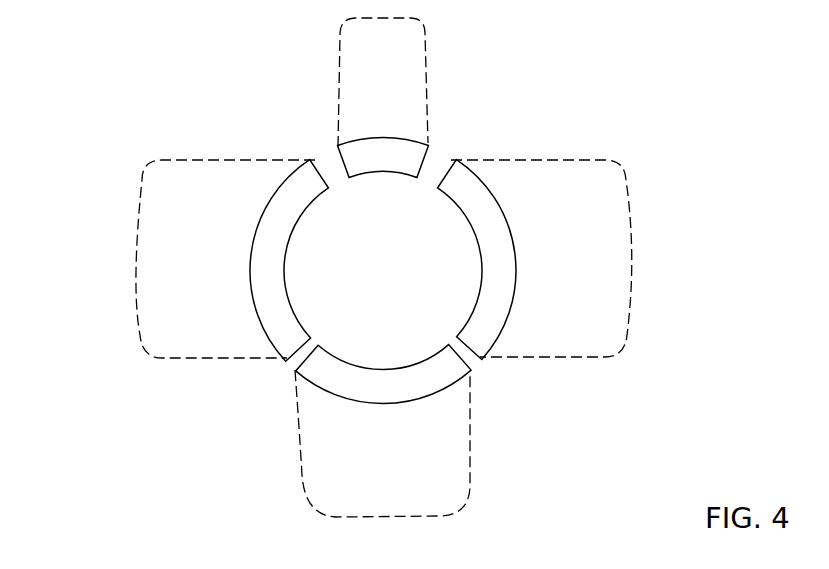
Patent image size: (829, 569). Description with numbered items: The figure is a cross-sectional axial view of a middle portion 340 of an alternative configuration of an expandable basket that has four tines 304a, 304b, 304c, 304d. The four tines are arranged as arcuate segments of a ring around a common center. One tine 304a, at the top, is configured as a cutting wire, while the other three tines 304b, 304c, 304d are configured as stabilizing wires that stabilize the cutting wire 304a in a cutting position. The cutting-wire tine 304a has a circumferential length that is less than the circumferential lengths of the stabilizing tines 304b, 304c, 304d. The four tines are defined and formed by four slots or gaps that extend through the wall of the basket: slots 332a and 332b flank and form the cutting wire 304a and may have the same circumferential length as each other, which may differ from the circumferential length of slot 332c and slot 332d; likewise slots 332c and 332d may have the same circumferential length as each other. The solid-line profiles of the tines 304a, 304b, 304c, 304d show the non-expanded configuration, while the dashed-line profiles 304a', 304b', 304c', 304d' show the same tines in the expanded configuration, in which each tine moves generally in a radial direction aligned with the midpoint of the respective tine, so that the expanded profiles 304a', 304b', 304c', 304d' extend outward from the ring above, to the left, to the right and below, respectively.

The middle portion 340 is at (93, 110).
The tine 304a is at (420, 112).
The tine 304b is at (178, 261).
The tine 304c is at (592, 242).
The tine 304d is at (308, 411).
The tine in expanded configuration 304a' is at (325, 82).
The tine in expanded configuration 304b' is at (170, 259).
The tine in expanded configuration 304c' is at (604, 258).
The tine in expanded configuration 304d' is at (331, 462).
The slot 332a is at (332, 167).
The slot 332b is at (432, 163).
The slot 332c is at (290, 360).
The slot 332d is at (465, 355).